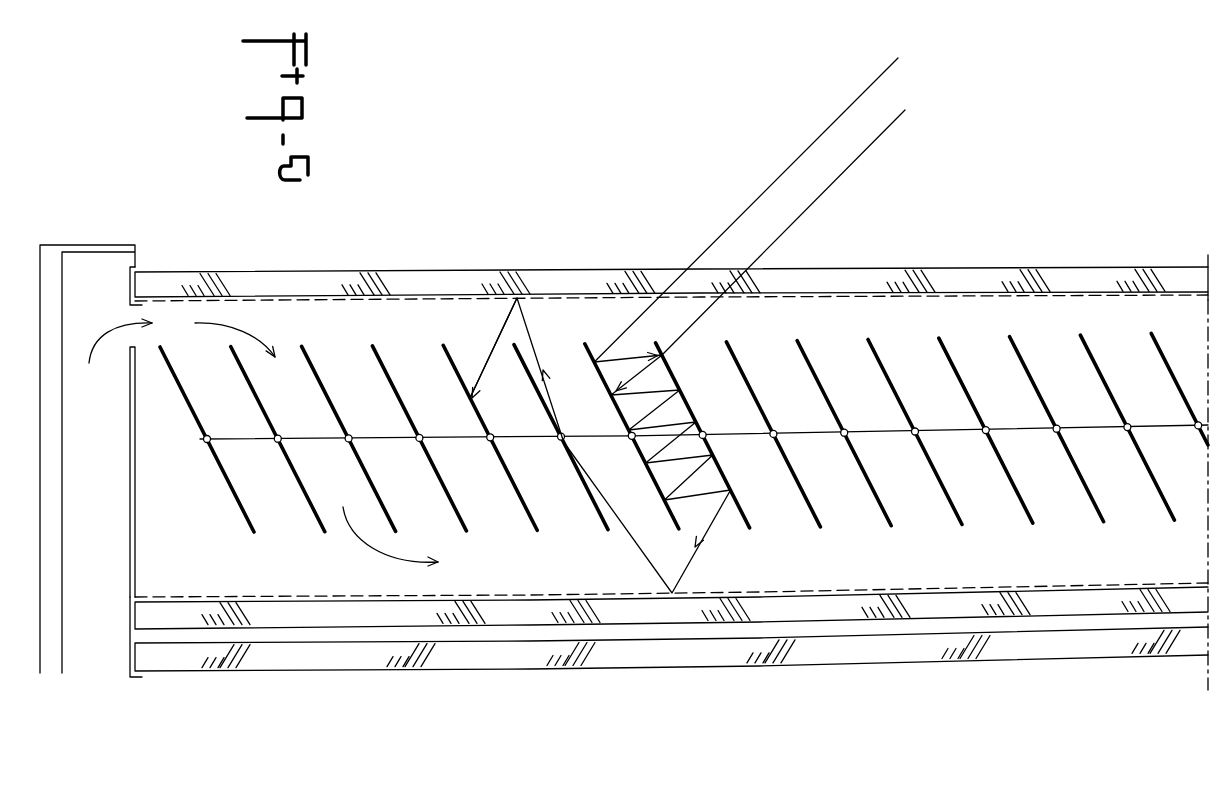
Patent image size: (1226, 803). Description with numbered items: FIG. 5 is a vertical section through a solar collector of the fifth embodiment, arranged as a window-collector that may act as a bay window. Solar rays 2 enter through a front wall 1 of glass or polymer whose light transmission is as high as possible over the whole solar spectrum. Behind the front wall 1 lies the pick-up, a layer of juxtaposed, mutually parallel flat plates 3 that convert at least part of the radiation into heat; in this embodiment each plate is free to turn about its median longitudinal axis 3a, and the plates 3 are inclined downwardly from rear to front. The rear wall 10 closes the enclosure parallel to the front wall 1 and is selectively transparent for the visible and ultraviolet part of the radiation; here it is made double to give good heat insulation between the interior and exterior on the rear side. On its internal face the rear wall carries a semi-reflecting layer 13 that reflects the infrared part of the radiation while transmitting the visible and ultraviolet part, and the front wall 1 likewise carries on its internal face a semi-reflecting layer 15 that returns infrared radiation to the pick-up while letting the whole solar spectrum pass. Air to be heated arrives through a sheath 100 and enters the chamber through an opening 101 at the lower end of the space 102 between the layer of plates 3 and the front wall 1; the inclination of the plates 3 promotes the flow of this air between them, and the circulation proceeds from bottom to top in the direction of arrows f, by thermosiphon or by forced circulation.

The front wall 1 is at (468, 283).
The solar rays 2 is at (858, 100).
The plates 3 is at (523, 502).
The median longitudinal axis 3a is at (560, 437).
The rear wall 10 is at (763, 677).
The semi-reflecting layer 13 is at (538, 597).
The semi-reflecting layer 15 is at (530, 298).
The sheath 100 is at (91, 461).
The opening 101 is at (132, 335).
The space 102 is at (405, 345).
The arrows f is at (362, 545).